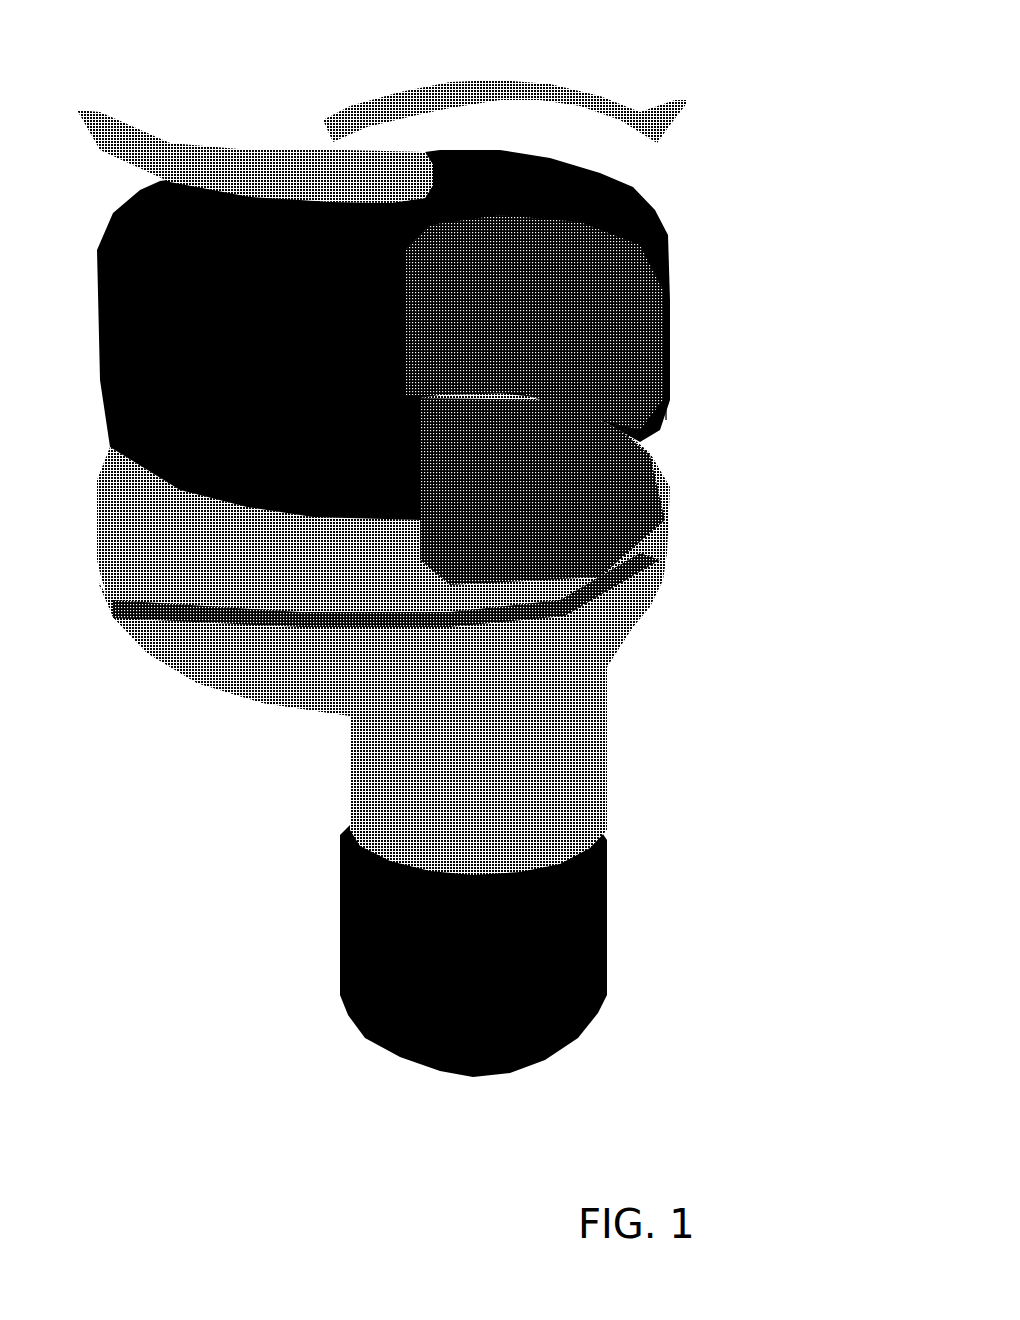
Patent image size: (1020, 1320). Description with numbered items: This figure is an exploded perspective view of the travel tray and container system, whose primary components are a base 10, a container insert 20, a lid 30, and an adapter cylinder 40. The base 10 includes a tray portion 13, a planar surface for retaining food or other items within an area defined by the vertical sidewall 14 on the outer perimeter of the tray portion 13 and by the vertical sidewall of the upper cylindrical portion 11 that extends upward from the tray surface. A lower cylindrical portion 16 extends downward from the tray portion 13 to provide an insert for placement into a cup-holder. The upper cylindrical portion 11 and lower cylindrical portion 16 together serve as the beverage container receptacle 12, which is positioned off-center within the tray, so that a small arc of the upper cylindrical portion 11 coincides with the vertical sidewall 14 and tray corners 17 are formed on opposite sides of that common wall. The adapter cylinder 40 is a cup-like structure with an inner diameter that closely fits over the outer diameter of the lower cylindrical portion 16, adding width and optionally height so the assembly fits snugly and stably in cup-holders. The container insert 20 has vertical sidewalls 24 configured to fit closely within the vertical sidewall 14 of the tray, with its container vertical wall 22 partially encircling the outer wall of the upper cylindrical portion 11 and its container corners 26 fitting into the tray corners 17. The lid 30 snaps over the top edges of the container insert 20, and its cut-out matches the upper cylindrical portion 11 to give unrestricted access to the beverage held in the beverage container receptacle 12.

The base 10 is at (660, 576).
The upper cylindrical portion 11 is at (357, 598).
The beverage container receptacle 12 is at (550, 582).
The tray portion 13 is at (242, 556).
The vertical sidewall 14 is at (573, 660).
The lower cylindrical portion 16 is at (572, 795).
The tray corners 17 is at (637, 550).
The container insert 20 is at (658, 290).
The container vertical wall 22 is at (555, 348).
The vertical sidewalls 24 is at (607, 183).
The container corners 26 is at (665, 378).
The lid 30 is at (603, 68).
The adapter cylinder 40 is at (572, 983).